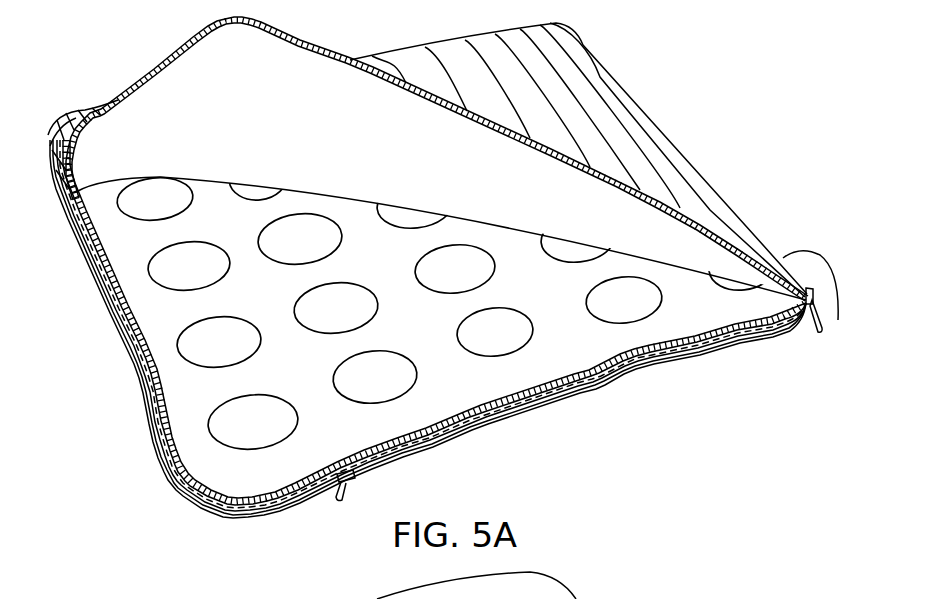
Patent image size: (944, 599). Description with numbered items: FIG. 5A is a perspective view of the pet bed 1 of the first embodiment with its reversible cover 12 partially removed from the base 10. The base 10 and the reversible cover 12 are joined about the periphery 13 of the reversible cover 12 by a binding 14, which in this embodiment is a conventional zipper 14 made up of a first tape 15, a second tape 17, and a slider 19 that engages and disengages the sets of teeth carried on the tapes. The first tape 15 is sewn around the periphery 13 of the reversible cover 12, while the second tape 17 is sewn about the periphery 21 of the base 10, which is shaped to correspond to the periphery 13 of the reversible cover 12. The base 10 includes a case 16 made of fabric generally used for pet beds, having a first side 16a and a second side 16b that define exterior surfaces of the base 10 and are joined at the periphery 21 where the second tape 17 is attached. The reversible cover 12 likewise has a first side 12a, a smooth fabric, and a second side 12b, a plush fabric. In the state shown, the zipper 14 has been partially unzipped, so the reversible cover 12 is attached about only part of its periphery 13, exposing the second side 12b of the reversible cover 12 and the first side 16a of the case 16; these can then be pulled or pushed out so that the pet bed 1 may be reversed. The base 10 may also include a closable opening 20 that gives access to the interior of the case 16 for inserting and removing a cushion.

The pet bed 1 is at (670, 66).
The base 10 is at (437, 447).
The reversible cover 12 is at (148, 70).
The first side 12a is at (663, 167).
The second side 12b is at (93, 153).
The periphery 13 is at (293, 36).
The binding 14 is at (858, 387).
The first tape 15 is at (838, 320).
The case 16 is at (428, 368).
The first side 16a is at (200, 463).
The second side 16b is at (225, 517).
The second tape 17 is at (775, 320).
The slider 19 is at (817, 333).
The closable opening 20 is at (350, 477).
The periphery 21 is at (147, 407).